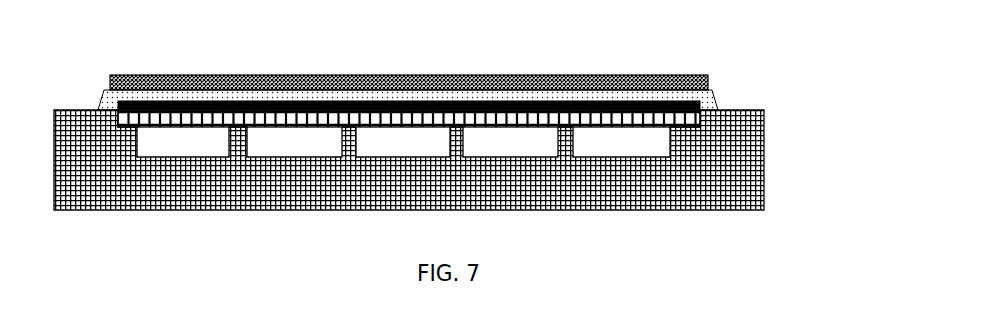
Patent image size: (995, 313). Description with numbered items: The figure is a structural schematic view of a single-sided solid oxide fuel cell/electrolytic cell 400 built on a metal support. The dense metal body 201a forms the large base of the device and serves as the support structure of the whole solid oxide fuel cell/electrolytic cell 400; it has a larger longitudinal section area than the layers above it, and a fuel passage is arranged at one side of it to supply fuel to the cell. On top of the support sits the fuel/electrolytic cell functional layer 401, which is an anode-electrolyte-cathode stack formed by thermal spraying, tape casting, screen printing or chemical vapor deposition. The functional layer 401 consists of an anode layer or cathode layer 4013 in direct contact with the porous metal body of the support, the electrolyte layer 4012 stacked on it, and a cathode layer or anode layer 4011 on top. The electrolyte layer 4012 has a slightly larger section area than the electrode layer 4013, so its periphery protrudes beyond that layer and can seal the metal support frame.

The dense metal body 201a is at (769, 164).
The single-sided solid oxide fuel cell/electrolytic cell 400 is at (424, 53).
The fuel/electrolytic cell functional layer 401 is at (437, 80).
The cathode layer or anode layer 4011 is at (490, 74).
The electrolyte layer 4012 is at (528, 97).
The anode layer or cathode layer 4013 is at (588, 106).